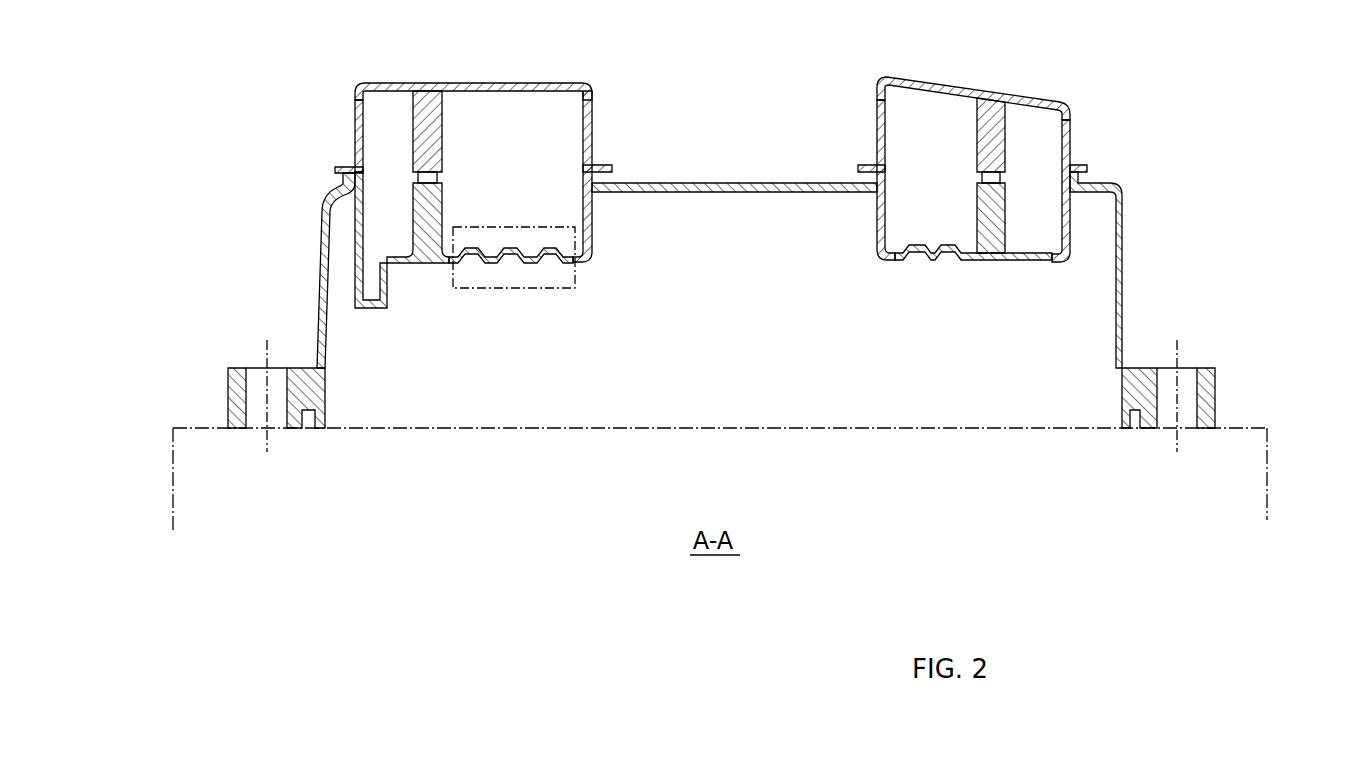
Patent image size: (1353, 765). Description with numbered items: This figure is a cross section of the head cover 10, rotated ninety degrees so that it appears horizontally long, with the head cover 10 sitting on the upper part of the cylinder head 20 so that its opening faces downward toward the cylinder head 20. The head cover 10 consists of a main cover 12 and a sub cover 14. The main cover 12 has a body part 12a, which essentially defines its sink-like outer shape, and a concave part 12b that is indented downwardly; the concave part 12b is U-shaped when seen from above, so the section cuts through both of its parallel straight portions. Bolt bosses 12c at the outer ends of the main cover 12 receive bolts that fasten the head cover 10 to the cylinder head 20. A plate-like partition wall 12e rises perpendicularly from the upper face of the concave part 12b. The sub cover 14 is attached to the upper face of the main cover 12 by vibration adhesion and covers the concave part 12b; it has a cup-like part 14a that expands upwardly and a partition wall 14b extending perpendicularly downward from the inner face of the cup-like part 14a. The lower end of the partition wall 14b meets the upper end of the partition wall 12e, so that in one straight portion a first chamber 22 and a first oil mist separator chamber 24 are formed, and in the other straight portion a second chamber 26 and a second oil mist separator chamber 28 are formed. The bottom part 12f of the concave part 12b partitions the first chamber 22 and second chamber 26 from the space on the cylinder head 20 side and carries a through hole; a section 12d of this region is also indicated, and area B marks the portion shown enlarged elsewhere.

The head cover 10 is at (1170, 118).
The main cover 12 is at (1125, 262).
The body part 12a is at (745, 183).
The concave part 12b is at (605, 265).
The bolt boss 12c is at (228, 385).
The bottom wall 12d is at (575, 262).
The partition wall 12e is at (443, 205).
The bottom part 12f is at (455, 303).
The sub cover 14 is at (499, 82).
The cup-like part 14a is at (592, 110).
The partition wall 14b is at (453, 108).
The cylinder head 20 is at (1268, 440).
The first chamber 22 is at (550, 118).
The first oil mist separator chamber 24 is at (383, 118).
The second chamber 26 is at (925, 108).
The second oil mist separator chamber 28 is at (1044, 128).
The area B is at (546, 225).